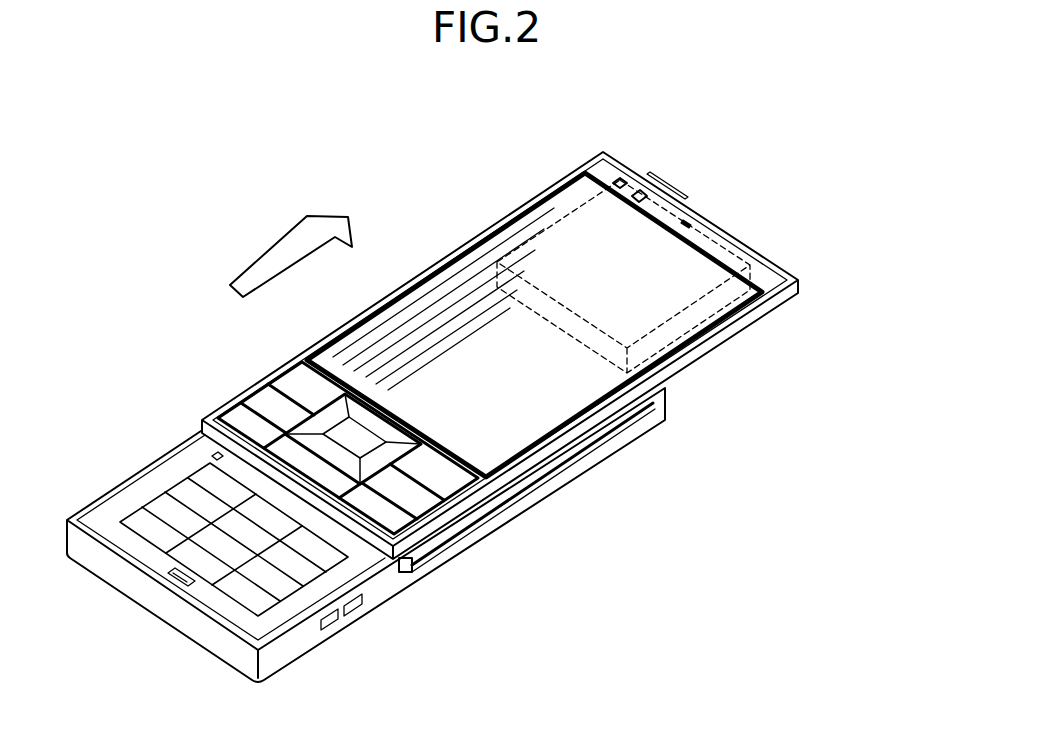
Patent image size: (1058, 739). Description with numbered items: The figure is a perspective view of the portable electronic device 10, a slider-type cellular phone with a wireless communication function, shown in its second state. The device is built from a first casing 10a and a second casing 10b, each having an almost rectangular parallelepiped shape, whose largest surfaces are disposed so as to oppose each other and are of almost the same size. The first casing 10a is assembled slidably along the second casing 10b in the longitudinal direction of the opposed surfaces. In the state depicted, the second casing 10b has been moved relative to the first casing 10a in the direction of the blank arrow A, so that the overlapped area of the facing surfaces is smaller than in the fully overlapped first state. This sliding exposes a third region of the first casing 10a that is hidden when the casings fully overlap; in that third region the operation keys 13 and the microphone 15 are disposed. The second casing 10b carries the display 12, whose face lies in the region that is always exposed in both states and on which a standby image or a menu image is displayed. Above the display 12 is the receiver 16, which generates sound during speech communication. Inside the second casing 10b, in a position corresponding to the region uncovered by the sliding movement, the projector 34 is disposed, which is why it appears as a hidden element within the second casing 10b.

The portable electronic device 10 is at (724, 120).
The first casing 10a is at (417, 531).
The second casing 10b is at (551, 346).
The display 12 is at (505, 380).
The operation keys 13 is at (295, 566).
The microphone 15 is at (167, 580).
The receiver 16 is at (689, 220).
The projector 34 is at (582, 203).
The blank arrow A is at (270, 258).